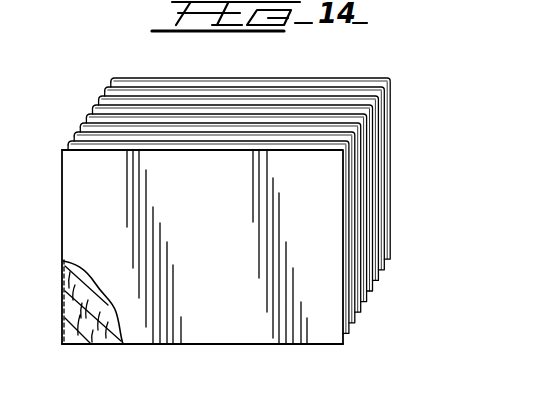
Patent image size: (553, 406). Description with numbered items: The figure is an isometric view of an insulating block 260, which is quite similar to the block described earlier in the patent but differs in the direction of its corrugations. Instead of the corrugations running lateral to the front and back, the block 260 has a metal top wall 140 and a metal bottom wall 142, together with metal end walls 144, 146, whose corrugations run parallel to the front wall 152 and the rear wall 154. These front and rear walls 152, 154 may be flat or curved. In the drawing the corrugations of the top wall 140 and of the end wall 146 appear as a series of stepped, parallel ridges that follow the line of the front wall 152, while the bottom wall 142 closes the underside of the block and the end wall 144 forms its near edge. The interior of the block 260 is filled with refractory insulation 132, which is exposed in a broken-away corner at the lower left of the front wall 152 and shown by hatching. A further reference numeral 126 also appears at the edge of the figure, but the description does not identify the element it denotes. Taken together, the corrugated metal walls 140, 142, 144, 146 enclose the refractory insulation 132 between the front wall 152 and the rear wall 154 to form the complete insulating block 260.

The insulating block 260 is at (406, 87).
The metal top wall 140 is at (102, 104).
The rear wall 154 is at (236, 78).
The metal end wall 146 is at (375, 196).
The front wall 152 is at (228, 242).
The metal end wall 144 is at (62, 205).
The metal bottom wall 142 is at (286, 346).
The refractory insulation 132 is at (63, 318).
The top left corner of stack 126 is at (55, 125).